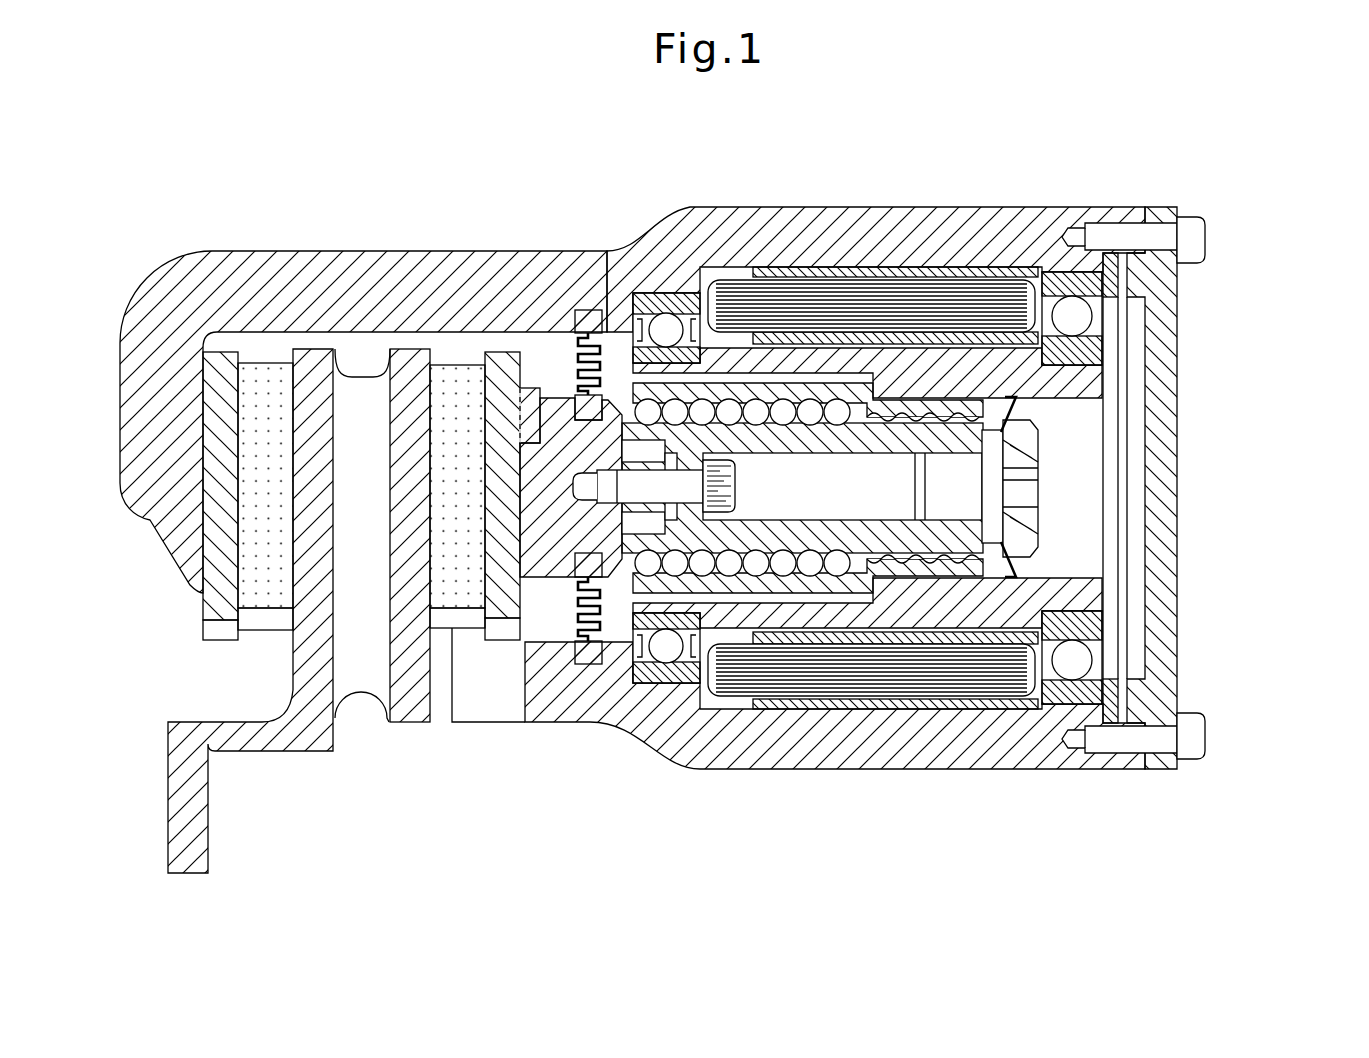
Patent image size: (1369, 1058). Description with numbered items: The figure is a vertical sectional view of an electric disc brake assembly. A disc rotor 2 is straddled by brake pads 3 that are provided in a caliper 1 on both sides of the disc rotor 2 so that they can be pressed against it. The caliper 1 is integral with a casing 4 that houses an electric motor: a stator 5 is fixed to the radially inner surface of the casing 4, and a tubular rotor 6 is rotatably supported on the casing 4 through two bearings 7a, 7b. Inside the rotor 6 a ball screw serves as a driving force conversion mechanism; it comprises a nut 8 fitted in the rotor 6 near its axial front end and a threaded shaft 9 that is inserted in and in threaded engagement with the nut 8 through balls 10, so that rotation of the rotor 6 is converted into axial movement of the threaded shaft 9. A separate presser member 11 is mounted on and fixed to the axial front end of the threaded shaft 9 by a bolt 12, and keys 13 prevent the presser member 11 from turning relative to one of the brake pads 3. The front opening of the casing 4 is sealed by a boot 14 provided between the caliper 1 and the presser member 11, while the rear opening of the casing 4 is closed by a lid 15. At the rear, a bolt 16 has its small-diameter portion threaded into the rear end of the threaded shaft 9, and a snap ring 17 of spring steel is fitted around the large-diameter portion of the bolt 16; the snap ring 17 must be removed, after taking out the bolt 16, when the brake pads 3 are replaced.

The caliper 1 is at (168, 310).
The disc rotor 2 is at (362, 677).
The brake pads 3 is at (457, 380).
The casing 4 is at (942, 238).
The stator 5 is at (900, 307).
The tubular rotor 6 is at (985, 370).
The bearing 7a is at (653, 668).
The bearing 7b is at (1060, 693).
The nut 8 is at (753, 397).
The threaded shaft 9 is at (848, 403).
The balls 10 is at (813, 403).
The presser member 11 is at (557, 418).
The bolt 12 is at (715, 488).
The keys 13 is at (538, 395).
The boot 14 is at (525, 672).
The lid 15 is at (1160, 698).
The bolt 16 is at (1015, 437).
The snap ring 17 is at (1030, 412).